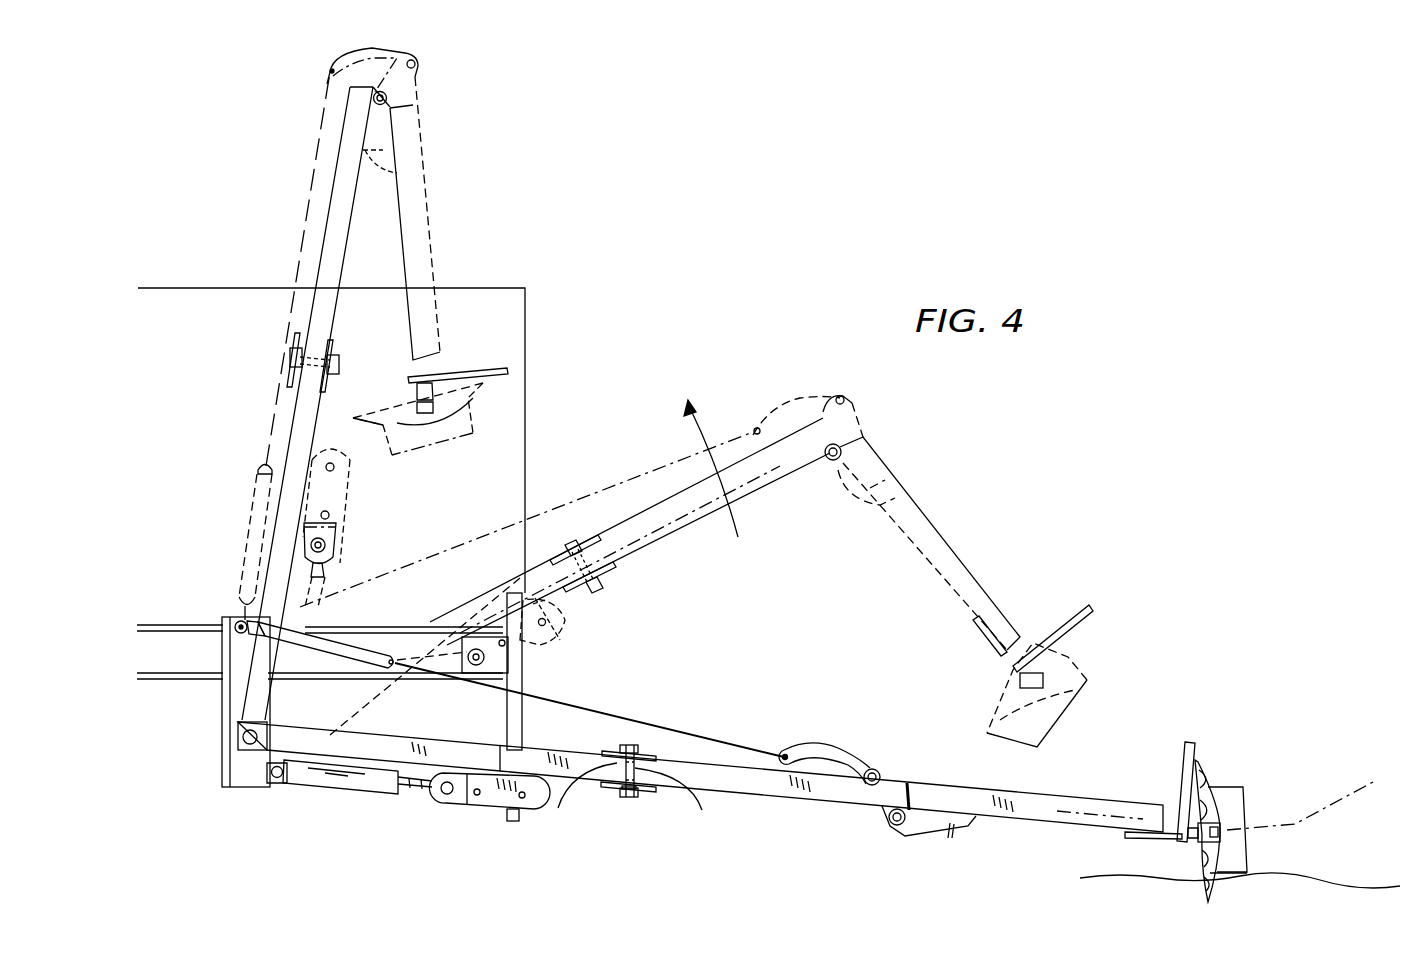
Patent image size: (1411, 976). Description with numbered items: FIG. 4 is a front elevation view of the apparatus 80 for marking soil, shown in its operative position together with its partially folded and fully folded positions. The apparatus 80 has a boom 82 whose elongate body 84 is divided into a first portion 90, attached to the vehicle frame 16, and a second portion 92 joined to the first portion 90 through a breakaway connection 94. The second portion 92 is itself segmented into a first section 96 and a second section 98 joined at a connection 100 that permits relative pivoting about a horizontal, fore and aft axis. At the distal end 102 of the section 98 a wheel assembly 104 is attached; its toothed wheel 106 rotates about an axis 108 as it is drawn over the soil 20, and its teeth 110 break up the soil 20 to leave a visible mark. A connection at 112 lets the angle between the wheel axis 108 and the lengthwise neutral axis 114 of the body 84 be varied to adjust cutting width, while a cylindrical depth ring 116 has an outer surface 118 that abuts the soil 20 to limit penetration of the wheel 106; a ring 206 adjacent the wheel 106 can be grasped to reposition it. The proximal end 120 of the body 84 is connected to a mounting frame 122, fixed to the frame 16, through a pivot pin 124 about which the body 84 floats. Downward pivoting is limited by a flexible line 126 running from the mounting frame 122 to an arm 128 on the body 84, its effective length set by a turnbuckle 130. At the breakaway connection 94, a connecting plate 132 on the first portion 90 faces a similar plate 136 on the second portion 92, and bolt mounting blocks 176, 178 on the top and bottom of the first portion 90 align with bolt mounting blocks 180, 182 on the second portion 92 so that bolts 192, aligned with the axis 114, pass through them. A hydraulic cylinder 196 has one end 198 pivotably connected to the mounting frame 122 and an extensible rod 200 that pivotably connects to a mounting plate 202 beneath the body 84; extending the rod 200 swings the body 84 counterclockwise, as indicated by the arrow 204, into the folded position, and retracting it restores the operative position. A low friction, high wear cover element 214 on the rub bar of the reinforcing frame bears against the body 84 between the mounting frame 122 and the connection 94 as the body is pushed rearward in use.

The vehicle frame 16 is at (187, 626).
The soil 20 is at (1353, 923).
The apparatus for marking soil 80 is at (876, 742).
The boom 82 is at (752, 760).
The elongate body 84 is at (790, 800).
The first portion 90 is at (490, 745).
The second portion 92 is at (700, 748).
The breakaway connection 94 is at (606, 799).
The first section 96 is at (880, 797).
The second section 98 is at (1013, 780).
The connection 100 is at (895, 830).
The distal end 102 is at (1163, 807).
The wheel assembly 104 is at (1240, 771).
The toothed wheel 106 is at (1203, 883).
The axis 108 is at (1317, 798).
The teeth 110 is at (1212, 760).
The connection 112 is at (1172, 820).
The lengthwise neutral axis 114 is at (1060, 811).
The cylindrical depth ring 116 is at (1237, 815).
The outer surface 118 is at (1235, 876).
The proximal end 120 is at (238, 707).
The mounting frame 122 is at (236, 680).
The pivot pin 124 is at (240, 745).
The flexible line 126 is at (663, 760).
The arm 128 is at (815, 745).
The turnbuckle 130 is at (352, 642).
The connecting plate 132 is at (578, 792).
The plate 136 is at (655, 778).
The bolt mounting block 176 is at (615, 748).
The bolt mounting block 178 is at (622, 797).
The bolt mounting block 180 is at (628, 745).
The bolt mounting block 182 is at (637, 797).
The bolts 192 is at (640, 745).
The hydraulic cylinder 196 is at (313, 781).
The one end 198 is at (272, 778).
The extensible rod 200 is at (410, 790).
The mounting plate 202 is at (516, 816).
The arrow 204 is at (690, 433).
The ring 206 is at (1188, 743).
The cover element 214 is at (525, 655).